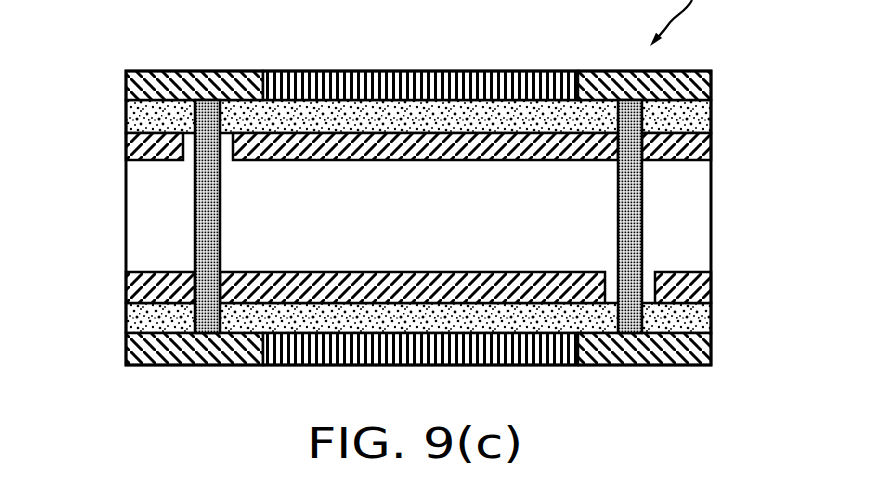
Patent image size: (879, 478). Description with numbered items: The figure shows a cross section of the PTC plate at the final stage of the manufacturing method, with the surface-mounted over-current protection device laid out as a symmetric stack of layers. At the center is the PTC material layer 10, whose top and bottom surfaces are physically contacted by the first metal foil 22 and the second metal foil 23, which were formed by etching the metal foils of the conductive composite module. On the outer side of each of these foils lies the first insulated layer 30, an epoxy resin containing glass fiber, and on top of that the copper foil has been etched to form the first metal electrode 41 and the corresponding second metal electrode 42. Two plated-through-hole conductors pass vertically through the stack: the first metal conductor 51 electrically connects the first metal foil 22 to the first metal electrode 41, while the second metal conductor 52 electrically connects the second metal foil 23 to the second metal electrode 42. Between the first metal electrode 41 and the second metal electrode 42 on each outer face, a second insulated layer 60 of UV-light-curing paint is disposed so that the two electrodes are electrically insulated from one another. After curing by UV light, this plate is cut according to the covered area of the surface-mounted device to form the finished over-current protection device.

The PTC material layer 10 is at (703, 233).
The first metal foil 22 is at (126, 143).
The second metal foil 23 is at (126, 288).
The first insulated layer 30 is at (711, 116).
The first metal electrode 41 is at (711, 84).
The second metal electrode 42 is at (126, 82).
The first metal conductor 51 is at (642, 200).
The second metal conductor 52 is at (195, 200).
The second insulated layer 60 is at (421, 71).